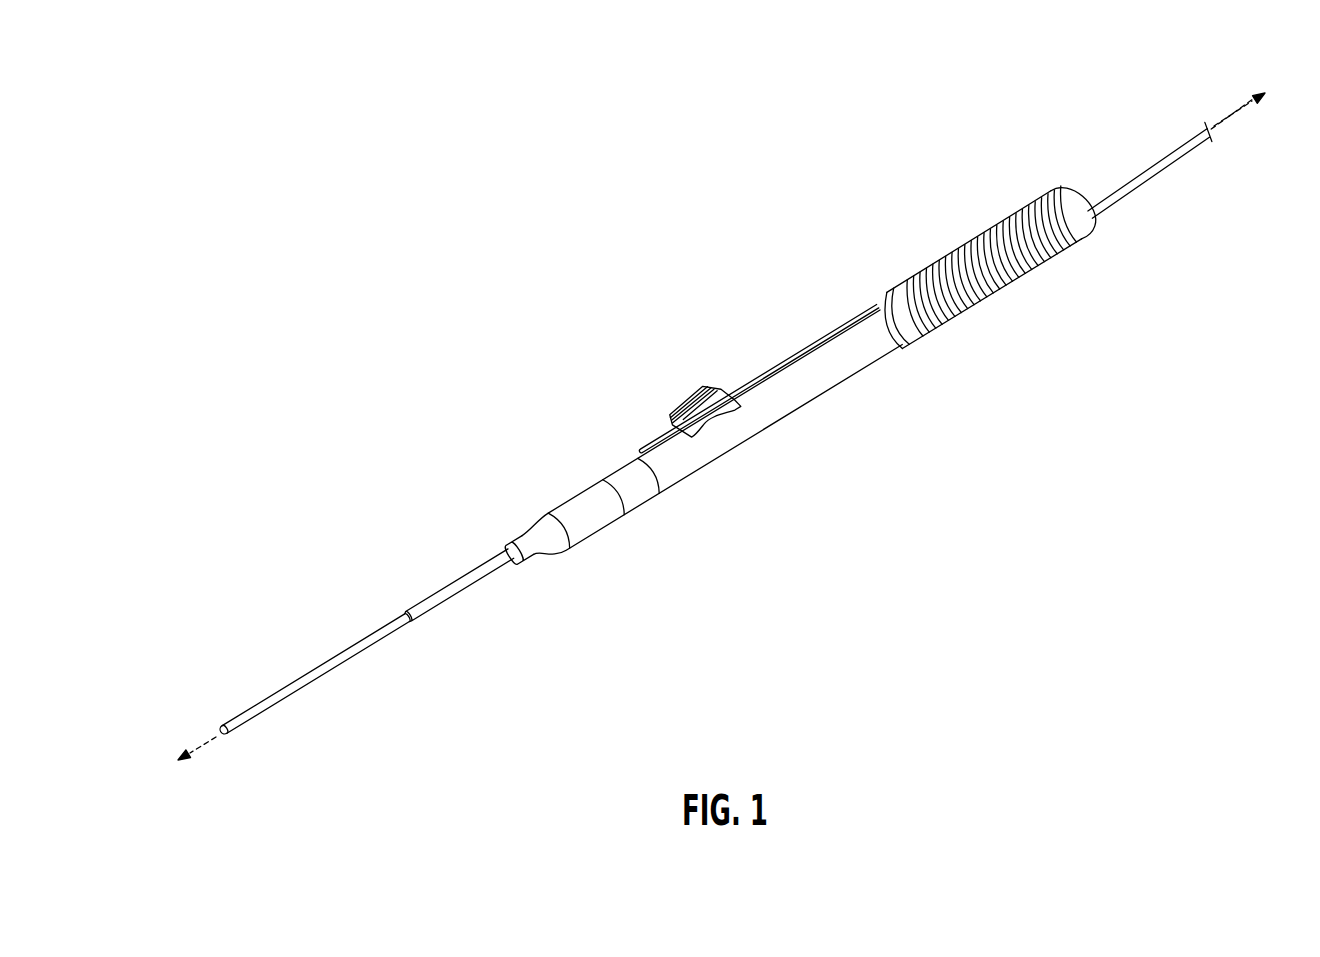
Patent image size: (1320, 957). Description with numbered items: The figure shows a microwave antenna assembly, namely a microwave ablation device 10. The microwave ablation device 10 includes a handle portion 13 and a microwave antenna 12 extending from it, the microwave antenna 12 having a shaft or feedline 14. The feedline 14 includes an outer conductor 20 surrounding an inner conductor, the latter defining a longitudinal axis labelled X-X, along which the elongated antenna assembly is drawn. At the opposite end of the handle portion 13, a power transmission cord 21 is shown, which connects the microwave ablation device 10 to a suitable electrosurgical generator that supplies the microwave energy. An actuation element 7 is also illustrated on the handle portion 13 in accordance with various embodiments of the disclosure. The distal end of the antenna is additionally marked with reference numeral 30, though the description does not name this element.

The microwave ablation device 10 is at (728, 429).
The actuation element 7 is at (699, 388).
The microwave antenna 12 is at (338, 635).
The handle portion 13 is at (880, 210).
The feedline 14 is at (474, 570).
The outer conductor 20 is at (303, 678).
The power transmission cord 21 is at (1136, 145).
The distal tip 30 is at (222, 731).